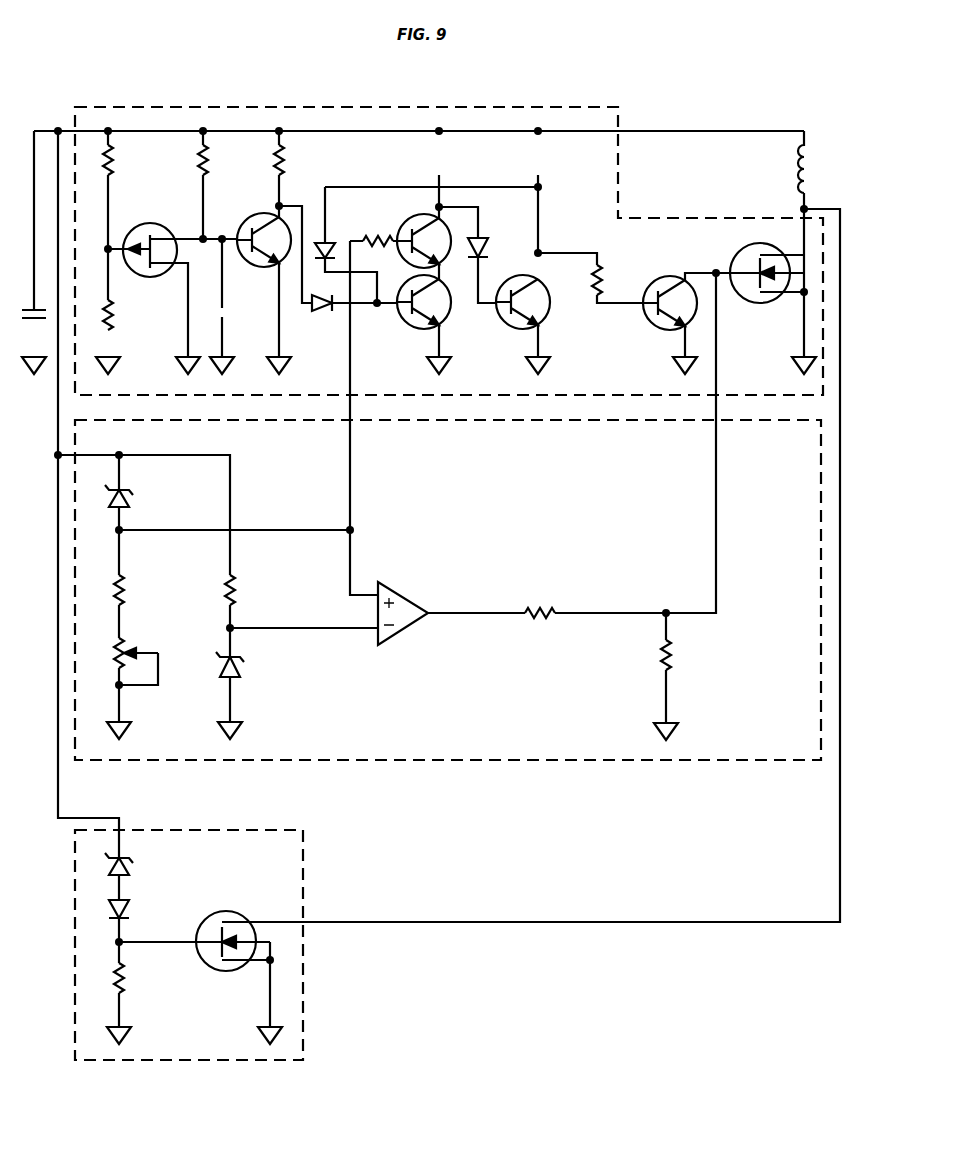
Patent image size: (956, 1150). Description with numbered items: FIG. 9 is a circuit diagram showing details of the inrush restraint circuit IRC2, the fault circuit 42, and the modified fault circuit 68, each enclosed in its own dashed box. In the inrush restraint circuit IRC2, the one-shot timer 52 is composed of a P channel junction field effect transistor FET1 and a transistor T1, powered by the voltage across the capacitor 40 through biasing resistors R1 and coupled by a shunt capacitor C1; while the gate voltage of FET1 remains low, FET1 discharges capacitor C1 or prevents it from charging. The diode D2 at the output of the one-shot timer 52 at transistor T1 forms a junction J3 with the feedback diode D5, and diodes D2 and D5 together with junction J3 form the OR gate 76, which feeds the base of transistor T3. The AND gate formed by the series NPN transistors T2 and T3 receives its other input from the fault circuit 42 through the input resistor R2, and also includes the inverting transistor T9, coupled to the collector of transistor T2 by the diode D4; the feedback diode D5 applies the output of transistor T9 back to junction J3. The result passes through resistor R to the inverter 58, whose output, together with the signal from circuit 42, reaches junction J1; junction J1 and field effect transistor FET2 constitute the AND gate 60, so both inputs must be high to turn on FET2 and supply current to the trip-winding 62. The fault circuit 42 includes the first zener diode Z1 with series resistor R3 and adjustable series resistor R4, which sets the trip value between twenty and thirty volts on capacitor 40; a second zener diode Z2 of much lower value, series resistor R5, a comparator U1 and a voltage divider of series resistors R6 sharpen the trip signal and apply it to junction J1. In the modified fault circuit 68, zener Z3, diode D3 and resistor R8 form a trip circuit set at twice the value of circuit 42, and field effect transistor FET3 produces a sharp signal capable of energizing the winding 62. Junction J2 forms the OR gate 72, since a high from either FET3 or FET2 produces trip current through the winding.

The inrush restraint circuit IRC2 is at (332, 112).
The capacitor 40 is at (30, 322).
The fault circuit 42 is at (355, 762).
The one-shot timer 52 is at (178, 175).
The inverter 58 is at (672, 261).
The AND gate 60 is at (732, 246).
The trip-winding 62 is at (800, 161).
The modified fault circuit 68 is at (303, 878).
The OR gate 72 is at (802, 208).
The OR gate 76 is at (376, 308).
The junction J1 is at (716, 268).
The junction J2 is at (806, 206).
The junction J3 is at (379, 308).
The resistor R is at (603, 272).
The biasing resistors R1 is at (112, 164).
The input resistor R2 is at (369, 238).
The series resistor R3 is at (125, 581).
The adjustable series resistor R4 is at (117, 652).
The series resistor R5 is at (236, 590).
The series resistors R6 is at (529, 609).
The resistor R8 is at (128, 986).
The shunt capacitor C1 is at (229, 320).
The diode D2 is at (318, 312).
The diode D3 is at (130, 913).
The diode D4 is at (482, 240).
The feedback diode D5 is at (320, 238).
The first zener diode Z1 is at (137, 493).
The second zener diode Z2 is at (236, 679).
The zener Z3 is at (134, 865).
The transistor T1 is at (244, 264).
The NPN transistor T2 is at (414, 220).
The NPN transistor T3 is at (449, 306).
The inverting transistor T9 is at (550, 307).
The comparator U1 is at (408, 633).
The P channel junction field effect transistor FET1 is at (129, 274).
The field effect transistor FET2 is at (753, 301).
The field effect transistor FET3 is at (220, 912).